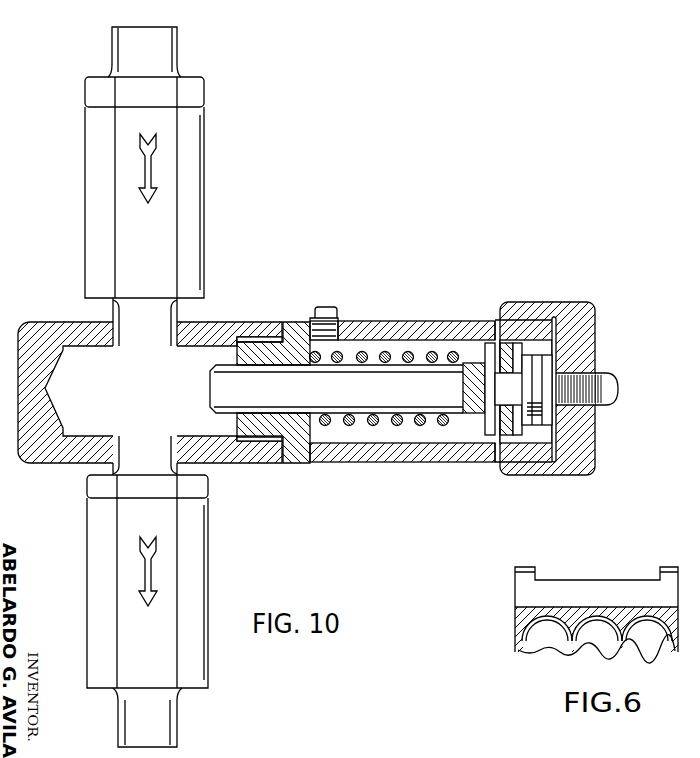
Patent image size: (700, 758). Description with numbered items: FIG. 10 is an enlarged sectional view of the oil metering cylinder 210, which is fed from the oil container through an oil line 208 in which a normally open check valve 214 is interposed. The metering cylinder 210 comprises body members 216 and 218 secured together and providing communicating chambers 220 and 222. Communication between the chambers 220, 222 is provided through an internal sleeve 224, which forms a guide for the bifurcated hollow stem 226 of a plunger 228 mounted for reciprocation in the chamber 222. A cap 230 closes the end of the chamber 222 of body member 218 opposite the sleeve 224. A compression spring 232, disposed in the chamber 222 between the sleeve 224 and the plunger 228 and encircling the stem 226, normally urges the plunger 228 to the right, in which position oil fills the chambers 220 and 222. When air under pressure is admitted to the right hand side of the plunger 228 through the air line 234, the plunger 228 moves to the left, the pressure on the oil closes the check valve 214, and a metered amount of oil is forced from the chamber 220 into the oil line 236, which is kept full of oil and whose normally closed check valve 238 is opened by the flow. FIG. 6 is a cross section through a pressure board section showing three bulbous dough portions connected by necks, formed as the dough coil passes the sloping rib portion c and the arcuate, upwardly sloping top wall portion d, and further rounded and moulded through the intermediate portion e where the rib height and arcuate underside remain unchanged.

In FIG. 10, the oil line 208 is at (180, 48).
In FIG. 10, the normally open check valve 214 is at (203, 127).
In FIG. 10, the body member 216 is at (228, 322).
In FIG. 10, the chamber 220 is at (288, 388).
In FIG. 10, the internal sleeve 224 is at (257, 340).
In FIG. 10, the oil metering cylinder 210 is at (287, 318).
In FIG. 10, the bifurcated hollow stem 226 is at (343, 355).
In FIG. 10, the body member 218 is at (377, 320).
In FIG. 10, the compression spring 232 is at (408, 353).
In FIG. 10, the chamber 222 is at (365, 432).
In FIG. 10, the plunger 228 is at (493, 437).
In FIG. 10, the cap 230 is at (523, 301).
In FIG. 10, the air line 234 is at (605, 373).
In FIG. 10, the normally closed check valve 238 is at (208, 542).
In FIG. 10, the oil line 236 is at (177, 733).
In FIG. 6, the intermediate portion e is at (565, 640).
In FIG. 6, the sloping rib portion c is at (588, 625).
In FIG. 6, the arcuate top wall portion d is at (640, 625).